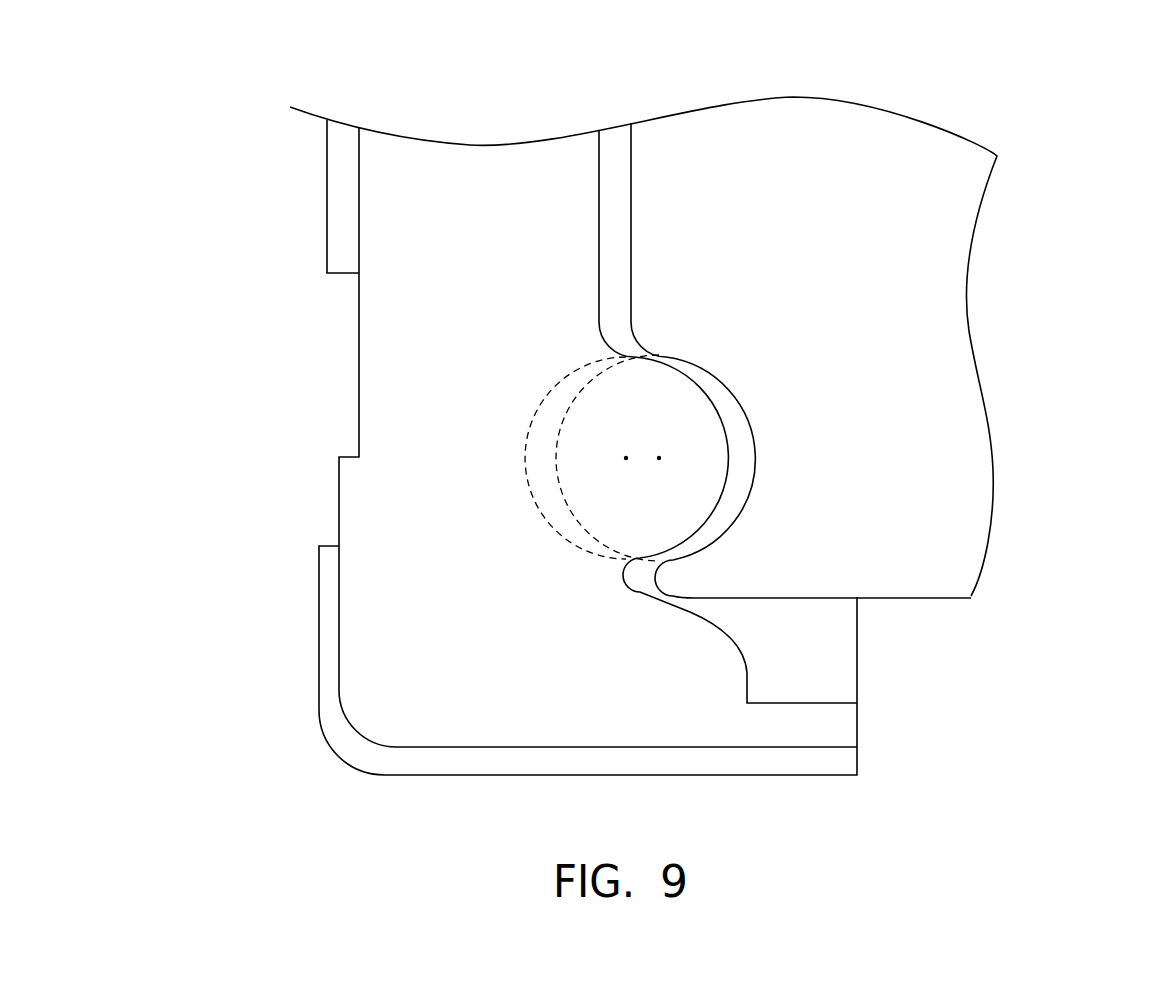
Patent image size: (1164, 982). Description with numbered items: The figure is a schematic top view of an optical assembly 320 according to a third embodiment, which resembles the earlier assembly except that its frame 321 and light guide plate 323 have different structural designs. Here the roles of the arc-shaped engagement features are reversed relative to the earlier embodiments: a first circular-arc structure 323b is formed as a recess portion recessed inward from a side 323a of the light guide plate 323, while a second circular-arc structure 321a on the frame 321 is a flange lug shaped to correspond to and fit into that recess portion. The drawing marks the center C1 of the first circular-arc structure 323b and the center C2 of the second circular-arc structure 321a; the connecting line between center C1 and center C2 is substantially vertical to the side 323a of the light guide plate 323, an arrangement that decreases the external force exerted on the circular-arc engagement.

The optical assembly 320 is at (148, 83).
The frame 321 is at (322, 365).
The second circular-arc structure 321a is at (700, 423).
The light guide plate 323 is at (961, 477).
The side 323a is at (632, 182).
The first circular-arc structure 323b is at (750, 498).
The center of the first circular-arc structure C1 is at (576, 458).
The center of the second circular-arc structure C2 is at (629, 458).